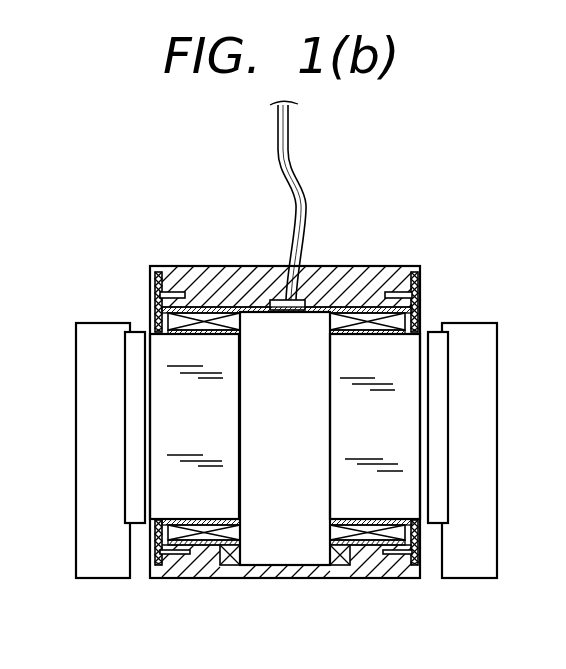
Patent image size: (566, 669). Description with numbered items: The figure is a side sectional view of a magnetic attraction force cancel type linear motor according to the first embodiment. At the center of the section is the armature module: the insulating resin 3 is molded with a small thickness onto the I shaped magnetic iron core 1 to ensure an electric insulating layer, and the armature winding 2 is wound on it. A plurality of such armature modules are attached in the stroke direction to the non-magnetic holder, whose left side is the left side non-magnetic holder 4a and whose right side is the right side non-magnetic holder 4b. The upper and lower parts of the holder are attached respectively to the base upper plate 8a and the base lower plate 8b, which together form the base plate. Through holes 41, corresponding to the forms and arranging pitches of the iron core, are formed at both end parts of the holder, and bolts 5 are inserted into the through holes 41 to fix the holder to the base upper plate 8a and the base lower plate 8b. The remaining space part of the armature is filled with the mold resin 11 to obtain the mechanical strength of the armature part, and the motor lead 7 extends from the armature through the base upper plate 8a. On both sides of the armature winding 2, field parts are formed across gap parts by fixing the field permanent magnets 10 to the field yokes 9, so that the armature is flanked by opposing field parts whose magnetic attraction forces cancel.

The I shaped magnetic iron core 1 is at (343, 437).
The armature winding 2 is at (202, 545).
The insulating resin 3 is at (150, 306).
The left side non-magnetic holder 4a is at (154, 278).
The right side non-magnetic holder 4b is at (423, 282).
The bolt 5 is at (178, 293).
The motor lead 7 is at (290, 131).
The base upper plate 8a is at (358, 275).
The base lower plate 8b is at (185, 567).
The field yoke 9 is at (104, 567).
The field permanent magnet 10 is at (132, 392).
The mold resin 11 is at (217, 308).
The through hole 41 is at (420, 293).